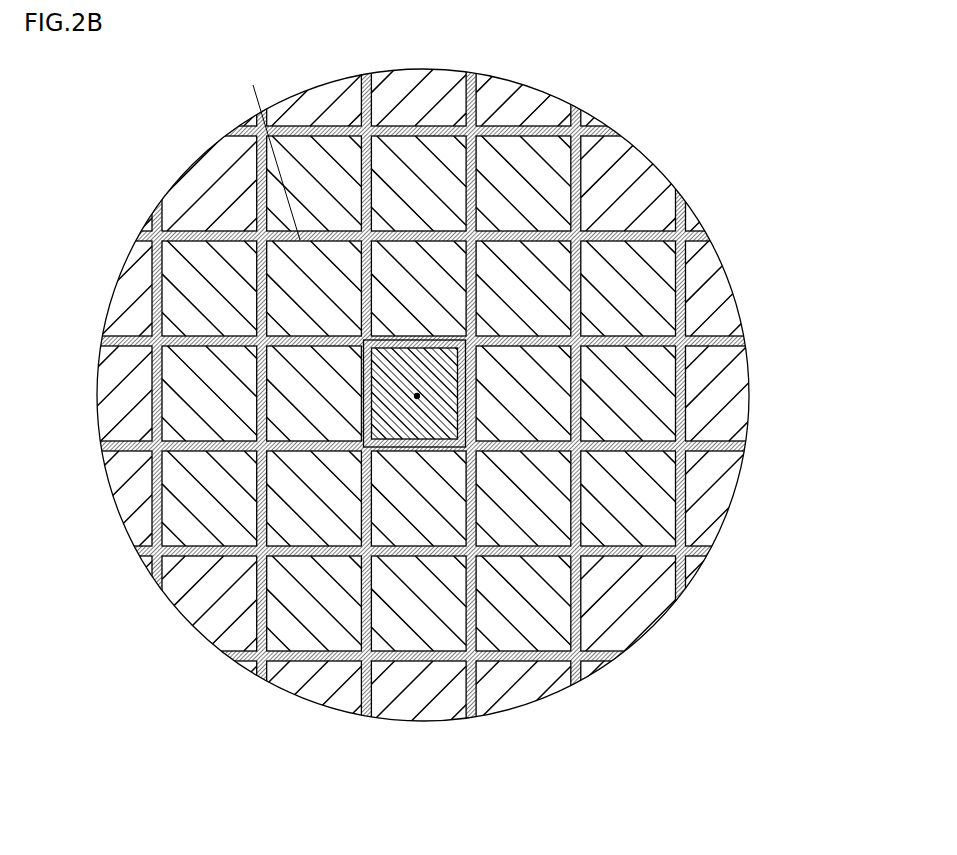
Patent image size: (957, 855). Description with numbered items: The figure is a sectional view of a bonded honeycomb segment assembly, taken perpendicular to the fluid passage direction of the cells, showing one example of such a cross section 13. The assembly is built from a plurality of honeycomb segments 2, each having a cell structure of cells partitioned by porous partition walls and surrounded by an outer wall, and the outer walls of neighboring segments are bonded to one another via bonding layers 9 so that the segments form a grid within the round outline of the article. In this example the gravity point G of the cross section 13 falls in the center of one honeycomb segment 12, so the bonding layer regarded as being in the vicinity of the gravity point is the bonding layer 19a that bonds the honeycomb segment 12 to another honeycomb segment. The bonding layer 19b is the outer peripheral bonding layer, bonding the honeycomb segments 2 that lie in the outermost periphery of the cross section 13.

The honeycomb segment 2 is at (507, 107).
The bonding layer 9 is at (270, 153).
The honeycomb segment 12 is at (683, 460).
The cross section 13 is at (432, 397).
The bonding layer 19a is at (440, 340).
The bonding layer 19b is at (473, 103).
The gravity point G is at (420, 397).